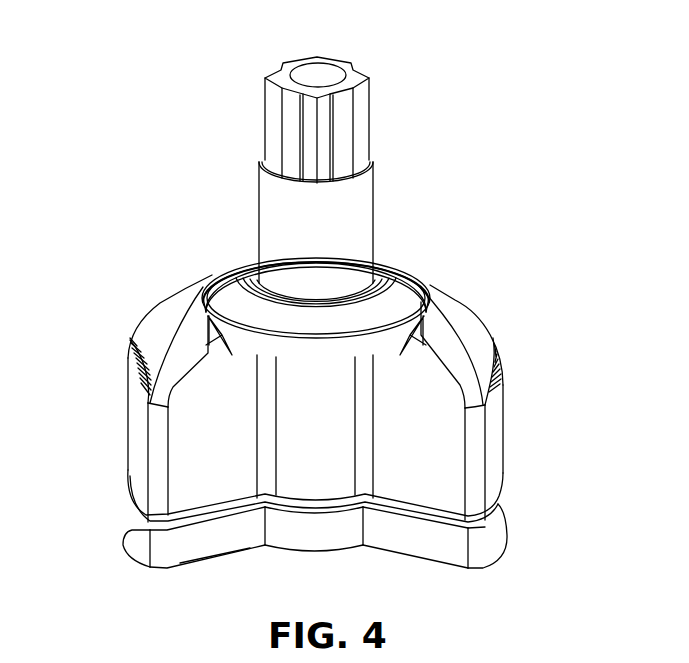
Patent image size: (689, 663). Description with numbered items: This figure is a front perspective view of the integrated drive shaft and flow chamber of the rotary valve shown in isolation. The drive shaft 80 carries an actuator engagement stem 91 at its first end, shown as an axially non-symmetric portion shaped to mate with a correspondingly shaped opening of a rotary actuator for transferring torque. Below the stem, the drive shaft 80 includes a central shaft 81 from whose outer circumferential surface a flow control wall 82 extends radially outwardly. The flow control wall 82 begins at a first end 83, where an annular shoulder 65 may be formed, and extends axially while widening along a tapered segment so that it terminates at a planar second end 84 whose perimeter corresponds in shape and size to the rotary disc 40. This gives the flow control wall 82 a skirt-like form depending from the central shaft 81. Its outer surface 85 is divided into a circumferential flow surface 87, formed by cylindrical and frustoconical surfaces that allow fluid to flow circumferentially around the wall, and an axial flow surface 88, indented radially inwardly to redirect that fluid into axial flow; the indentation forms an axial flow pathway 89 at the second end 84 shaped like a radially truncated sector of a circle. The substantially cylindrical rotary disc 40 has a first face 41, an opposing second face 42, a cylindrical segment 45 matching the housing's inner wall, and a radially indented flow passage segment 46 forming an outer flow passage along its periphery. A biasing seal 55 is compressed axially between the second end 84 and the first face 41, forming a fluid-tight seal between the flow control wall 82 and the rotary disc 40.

The rotary disc 40 is at (190, 556).
The first face 41 is at (128, 490).
The second face 42 is at (218, 556).
The cylindrical segment 45 is at (508, 527).
The flow passage segment 46 is at (240, 535).
The biasing seal 55 is at (122, 530).
The annular shoulder 65 is at (390, 283).
The drive shaft 80 is at (272, 203).
The central shaft 81 is at (365, 222).
The flow control wall 82 is at (134, 413).
The first end 83 is at (246, 288).
The second end 84 is at (139, 506).
The outer surface 85 is at (172, 327).
The circumferential flow surface 87 is at (455, 325).
The axial flow surface 88 is at (412, 480).
The axial flow pathway 89 is at (320, 508).
The actuator engagement stem 91 is at (272, 66).